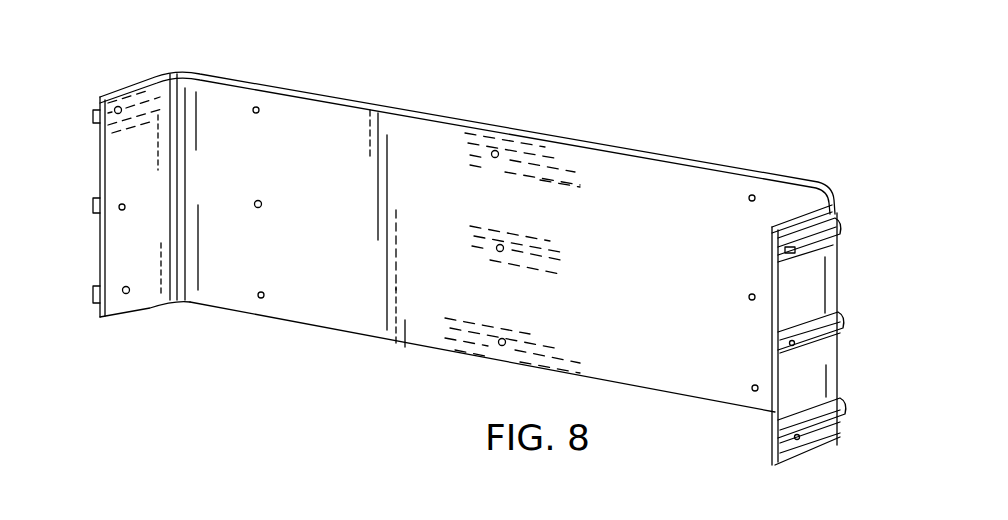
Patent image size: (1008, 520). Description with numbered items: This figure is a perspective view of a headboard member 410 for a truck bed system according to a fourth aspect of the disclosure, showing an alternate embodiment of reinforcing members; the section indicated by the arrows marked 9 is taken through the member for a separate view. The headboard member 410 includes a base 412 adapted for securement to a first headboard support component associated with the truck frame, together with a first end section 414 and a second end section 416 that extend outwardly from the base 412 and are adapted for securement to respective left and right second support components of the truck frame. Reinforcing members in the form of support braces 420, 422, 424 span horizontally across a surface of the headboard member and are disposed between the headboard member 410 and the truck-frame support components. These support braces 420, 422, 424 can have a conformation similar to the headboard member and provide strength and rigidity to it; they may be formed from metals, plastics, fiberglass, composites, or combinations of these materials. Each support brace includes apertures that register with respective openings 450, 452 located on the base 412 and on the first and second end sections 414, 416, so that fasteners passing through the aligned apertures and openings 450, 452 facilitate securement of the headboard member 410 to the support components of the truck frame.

The section line 9- 9 is at (214, 27).
The headboard member 410 is at (612, 121).
The base 412 is at (675, 378).
The first end section 414 is at (117, 240).
The second end section 416 is at (790, 397).
The support brace 420 is at (840, 218).
The support brace 422 is at (842, 325).
The support brace 424 is at (845, 409).
The opening 450 is at (258, 208).
The opening 452 is at (127, 294).